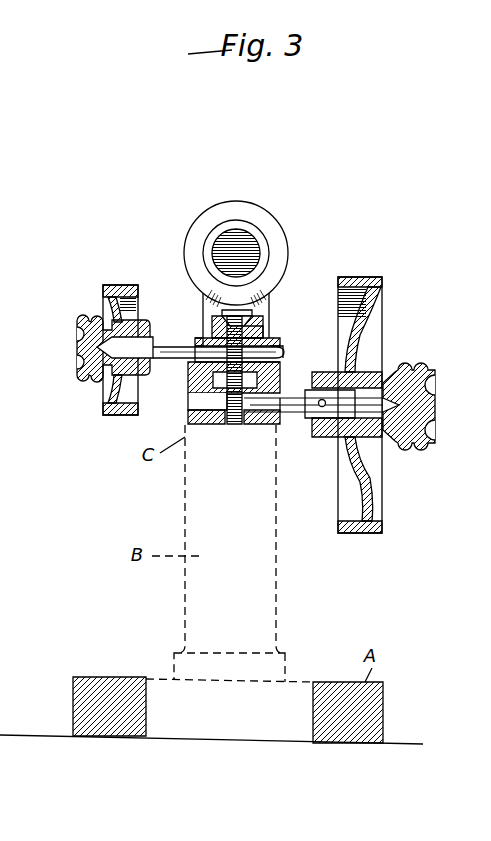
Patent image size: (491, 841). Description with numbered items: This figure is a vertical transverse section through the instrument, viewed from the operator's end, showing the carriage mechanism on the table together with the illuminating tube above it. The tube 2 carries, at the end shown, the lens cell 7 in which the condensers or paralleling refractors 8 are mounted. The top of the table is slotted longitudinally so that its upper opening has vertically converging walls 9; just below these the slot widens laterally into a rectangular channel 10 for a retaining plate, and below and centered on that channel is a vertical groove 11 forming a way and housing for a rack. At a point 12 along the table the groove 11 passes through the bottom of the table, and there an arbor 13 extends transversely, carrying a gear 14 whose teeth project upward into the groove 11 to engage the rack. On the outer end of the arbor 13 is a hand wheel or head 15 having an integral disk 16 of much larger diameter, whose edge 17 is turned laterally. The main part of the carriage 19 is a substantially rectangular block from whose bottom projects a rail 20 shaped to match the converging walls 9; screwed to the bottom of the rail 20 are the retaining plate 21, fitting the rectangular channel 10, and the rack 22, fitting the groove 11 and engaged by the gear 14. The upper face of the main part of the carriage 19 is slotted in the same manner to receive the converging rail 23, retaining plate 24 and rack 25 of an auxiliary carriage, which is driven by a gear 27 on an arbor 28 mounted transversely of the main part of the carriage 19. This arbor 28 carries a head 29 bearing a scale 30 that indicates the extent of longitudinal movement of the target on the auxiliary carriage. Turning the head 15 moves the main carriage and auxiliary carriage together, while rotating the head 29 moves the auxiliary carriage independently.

The tube 2 is at (207, 228).
The lens cell 7 is at (203, 253).
The condensers or paralleling refractors 8 is at (236, 239).
The converging walls 9 is at (189, 377).
The rectangular channel 10 is at (278, 390).
The vertical groove 11 is at (257, 426).
The point 12 is at (232, 426).
The arbor 13 is at (297, 418).
The gear 14 is at (205, 426).
The hand wheel or head 15 is at (437, 380).
The disk 16 is at (383, 318).
The edge 17 is at (352, 278).
The main part of the carriage 19 is at (279, 341).
The rail 20 is at (283, 361).
The retaining plate 21 is at (189, 391).
The rack 22 is at (190, 406).
The converging rail 23 is at (269, 321).
The retaining plate 24 is at (210, 326).
The rack 25 is at (274, 334).
The gear 27 is at (283, 351).
The arbor 28 is at (197, 338).
The head 29 is at (77, 351).
The scale 30 is at (120, 286).